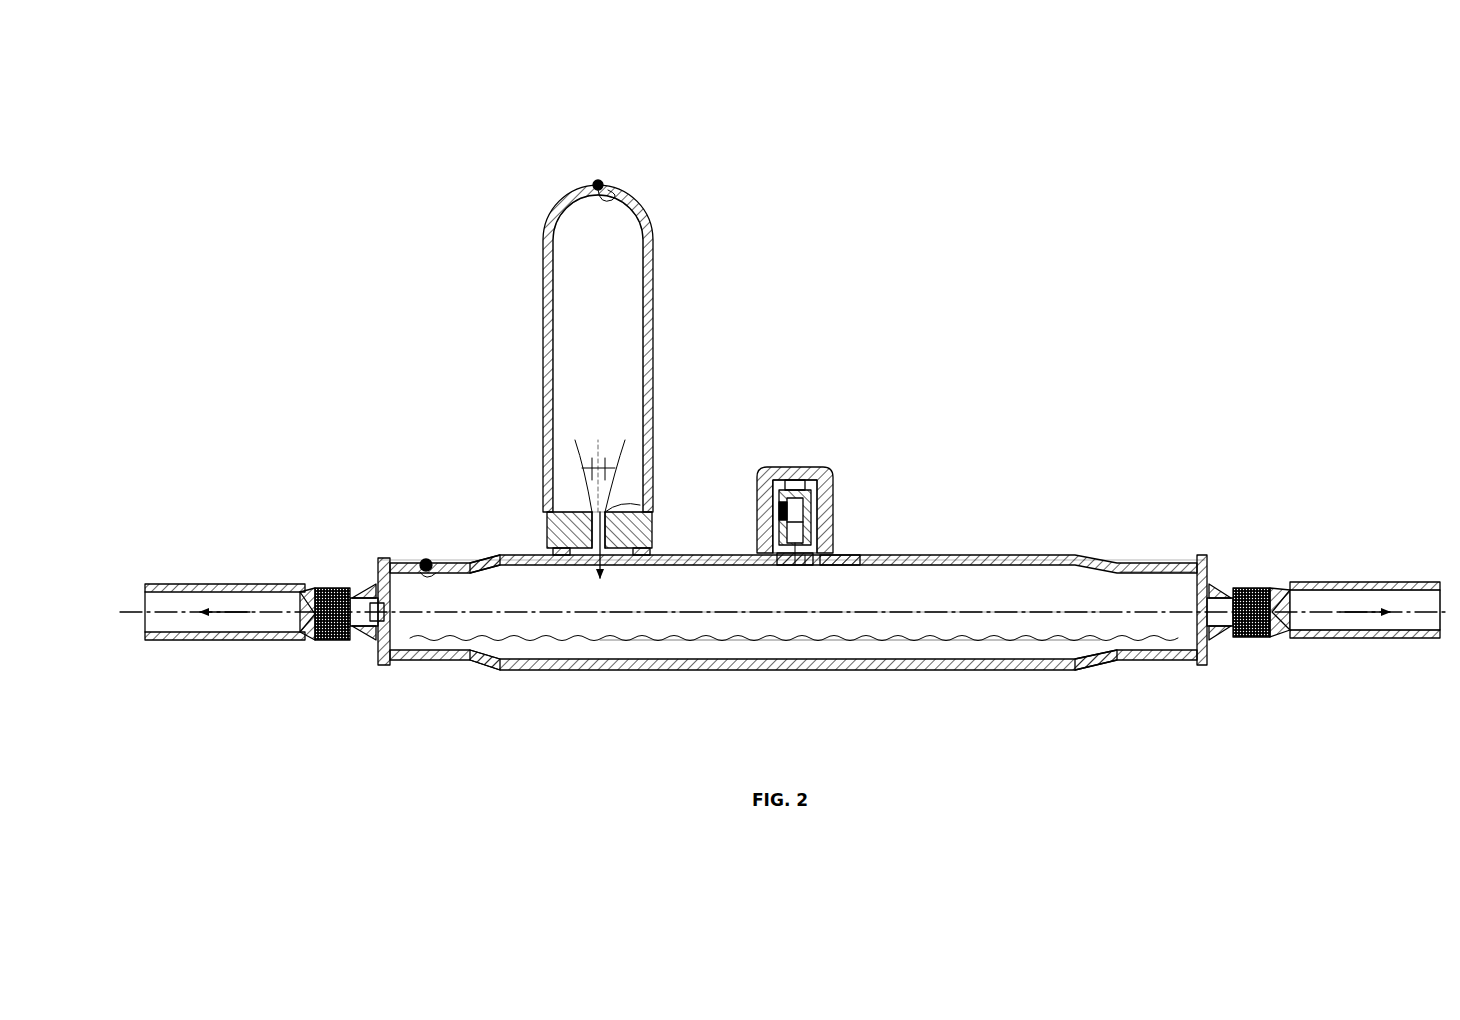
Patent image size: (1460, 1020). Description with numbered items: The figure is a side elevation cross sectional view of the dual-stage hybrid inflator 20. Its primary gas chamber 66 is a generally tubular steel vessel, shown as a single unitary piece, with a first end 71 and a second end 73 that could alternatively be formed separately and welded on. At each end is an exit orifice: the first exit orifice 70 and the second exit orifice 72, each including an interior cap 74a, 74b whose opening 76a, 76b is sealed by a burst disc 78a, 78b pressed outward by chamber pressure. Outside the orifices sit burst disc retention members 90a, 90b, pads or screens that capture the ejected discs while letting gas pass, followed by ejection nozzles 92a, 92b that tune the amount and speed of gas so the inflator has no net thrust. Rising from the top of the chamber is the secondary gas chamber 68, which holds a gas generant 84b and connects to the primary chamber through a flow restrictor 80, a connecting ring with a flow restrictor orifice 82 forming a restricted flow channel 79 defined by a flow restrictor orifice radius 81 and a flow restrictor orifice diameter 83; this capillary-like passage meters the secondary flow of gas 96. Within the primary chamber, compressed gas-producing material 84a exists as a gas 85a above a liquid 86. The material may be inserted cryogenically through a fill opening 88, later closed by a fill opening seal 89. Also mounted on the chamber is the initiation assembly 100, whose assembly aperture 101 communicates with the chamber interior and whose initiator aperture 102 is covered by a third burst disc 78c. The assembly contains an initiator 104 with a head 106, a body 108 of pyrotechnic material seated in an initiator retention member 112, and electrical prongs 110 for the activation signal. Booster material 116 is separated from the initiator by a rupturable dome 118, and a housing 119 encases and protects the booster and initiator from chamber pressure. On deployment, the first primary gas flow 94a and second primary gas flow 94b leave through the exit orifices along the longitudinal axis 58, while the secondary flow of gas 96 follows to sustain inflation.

The inflator 20 is at (1110, 385).
The longitudinal axis 58 is at (1400, 616).
The primary gas chamber 66 is at (1008, 555).
The secondary gas chamber 68 is at (655, 225).
The first exit orifice 70 is at (1248, 640).
The first end 71 is at (1152, 563).
The second exit orifice 72 is at (340, 642).
The second end 73 is at (400, 665).
The interior cap 74a is at (1218, 598).
The interior cap 74b is at (372, 598).
The opening 76a is at (1205, 667).
The opening 76b is at (375, 667).
The burst disc 78a is at (1115, 665).
The burst disc 78b is at (455, 665).
The third burst disc 78c is at (840, 565).
The restricted flow channel 79 is at (580, 568).
The flow restrictor 80 is at (555, 528).
The flow restrictor orifice radius 81 is at (608, 460).
The flow restrictor orifice 82 is at (610, 528).
The flow restrictor orifice diameter 83 is at (612, 440).
The gas-producing material 84a is at (805, 618).
The gas generant 84b is at (575, 330).
The gas 85a is at (905, 618).
The liquid 86 is at (885, 640).
The fill opening 88 is at (615, 198).
The fill opening seal 89 is at (598, 185).
The burst disc retention member 90a is at (1262, 584).
The burst disc retention member 90b is at (330, 586).
The ejection nozzle 92a is at (1288, 640).
The ejection nozzle 92b is at (305, 642).
The first primary gas flow 94a is at (1362, 616).
The second primary gas flow 94b is at (225, 616).
The secondary flow of gas 96 is at (640, 505).
The initiation assembly 100 is at (849, 479).
The assembly aperture 101 is at (800, 565).
The initiator aperture 102 is at (805, 565).
The initiator 104 is at (785, 530).
The head 106 is at (780, 563).
The body 108 is at (772, 495).
The electrical prongs 110 is at (785, 475).
The initiator retention member 112 is at (818, 478).
The booster material 116 is at (812, 515).
The dome 118 is at (813, 500).
The housing 119 is at (812, 528).